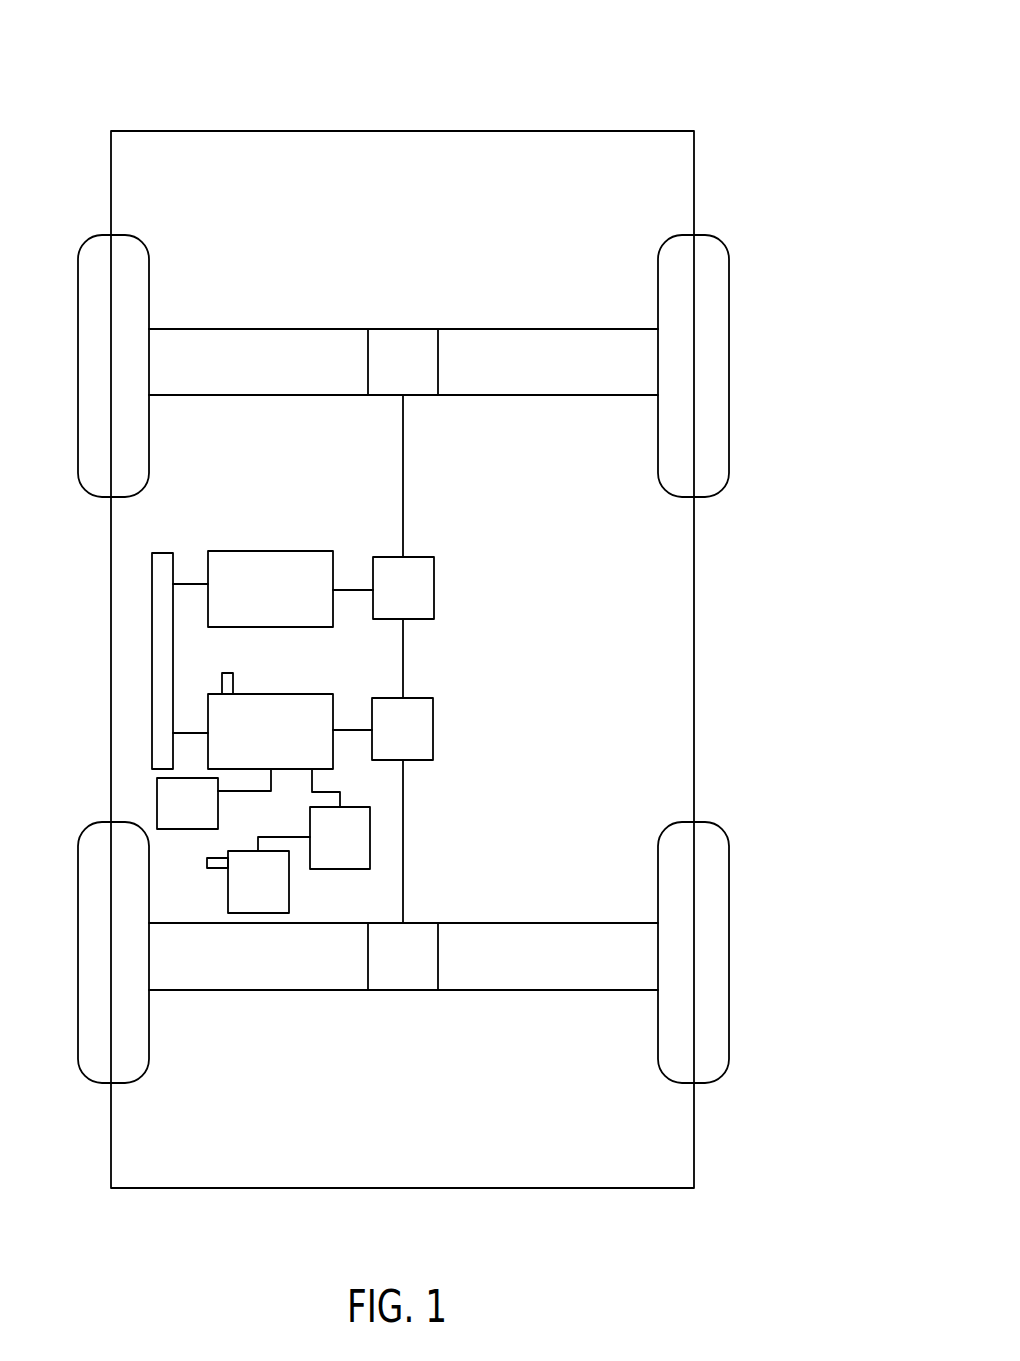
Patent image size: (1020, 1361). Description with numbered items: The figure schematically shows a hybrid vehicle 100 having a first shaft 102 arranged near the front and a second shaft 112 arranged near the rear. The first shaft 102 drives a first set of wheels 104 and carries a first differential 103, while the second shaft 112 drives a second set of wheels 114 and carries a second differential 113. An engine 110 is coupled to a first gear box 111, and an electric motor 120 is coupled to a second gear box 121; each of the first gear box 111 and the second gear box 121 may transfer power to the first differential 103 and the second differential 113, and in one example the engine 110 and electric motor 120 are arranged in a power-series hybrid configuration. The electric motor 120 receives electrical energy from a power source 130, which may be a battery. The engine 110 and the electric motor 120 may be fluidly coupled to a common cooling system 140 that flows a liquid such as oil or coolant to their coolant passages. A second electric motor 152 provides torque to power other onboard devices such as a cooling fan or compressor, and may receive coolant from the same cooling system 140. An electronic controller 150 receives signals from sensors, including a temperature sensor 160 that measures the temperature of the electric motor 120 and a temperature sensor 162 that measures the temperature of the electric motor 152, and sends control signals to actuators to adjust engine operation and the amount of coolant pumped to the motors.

The vehicle 100 is at (736, 19).
The first shaft 102 is at (560, 328).
The first differential 103 is at (386, 374).
The first set of wheels 104 is at (83, 248).
The engine 110 is at (254, 602).
The first gear box 111 is at (387, 602).
The second shaft 112 is at (570, 923).
The second differential 113 is at (386, 969).
The second set of wheels 114 is at (86, 828).
The electric motor 120 is at (254, 743).
The second gear box 121 is at (386, 742).
The power source 130 is at (172, 814).
The cooling system 140 is at (152, 663).
The electronic controller 150 is at (324, 850).
The electric motor 152 is at (242, 894).
The temperature sensor 160 is at (228, 673).
The temperature sensor 162 is at (207, 863).